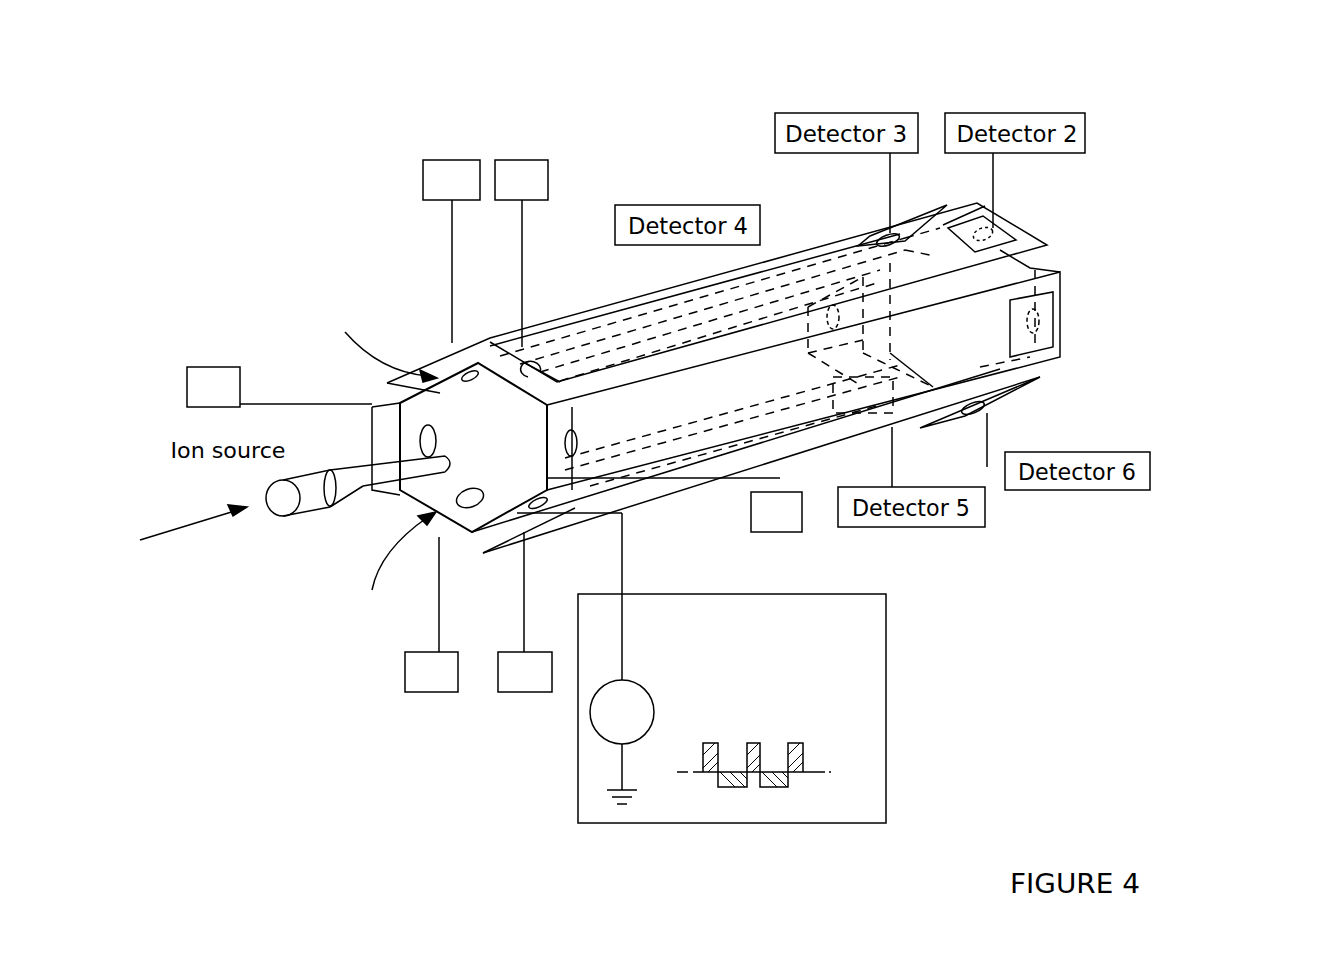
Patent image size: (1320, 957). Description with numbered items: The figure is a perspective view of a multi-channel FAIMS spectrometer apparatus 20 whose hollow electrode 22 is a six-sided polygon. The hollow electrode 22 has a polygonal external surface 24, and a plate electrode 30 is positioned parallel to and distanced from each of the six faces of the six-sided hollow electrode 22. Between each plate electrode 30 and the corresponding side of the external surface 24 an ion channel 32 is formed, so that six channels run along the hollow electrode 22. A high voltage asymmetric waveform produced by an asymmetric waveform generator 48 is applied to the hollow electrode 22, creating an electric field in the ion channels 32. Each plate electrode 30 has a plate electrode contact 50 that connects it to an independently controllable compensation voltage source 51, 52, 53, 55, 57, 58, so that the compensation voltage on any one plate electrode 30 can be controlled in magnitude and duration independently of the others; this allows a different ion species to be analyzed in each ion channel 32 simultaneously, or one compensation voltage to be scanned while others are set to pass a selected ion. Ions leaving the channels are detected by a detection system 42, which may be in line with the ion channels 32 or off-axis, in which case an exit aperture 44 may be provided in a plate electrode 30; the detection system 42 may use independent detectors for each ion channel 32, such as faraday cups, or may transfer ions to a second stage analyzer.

The apparatus 20 is at (1212, 150).
The hollow electrode 22 is at (458, 517).
The polygonal external surface 24 is at (547, 465).
The plate electrode 30 is at (572, 323).
The ion channel 32 is at (447, 373).
The detection system 42 is at (1045, 322).
The exit aperture 44 is at (1040, 315).
The asymmetric waveform generator 48 is at (886, 660).
The plate electrode contact 50 is at (452, 287).
The compensation voltage source 51 is at (530, 160).
The compensation voltage source 52 is at (800, 533).
The compensation voltage source 53 is at (190, 367).
The compensation voltage source 55 is at (445, 160).
The compensation voltage source 57 is at (405, 678).
The compensation voltage source 58 is at (525, 692).